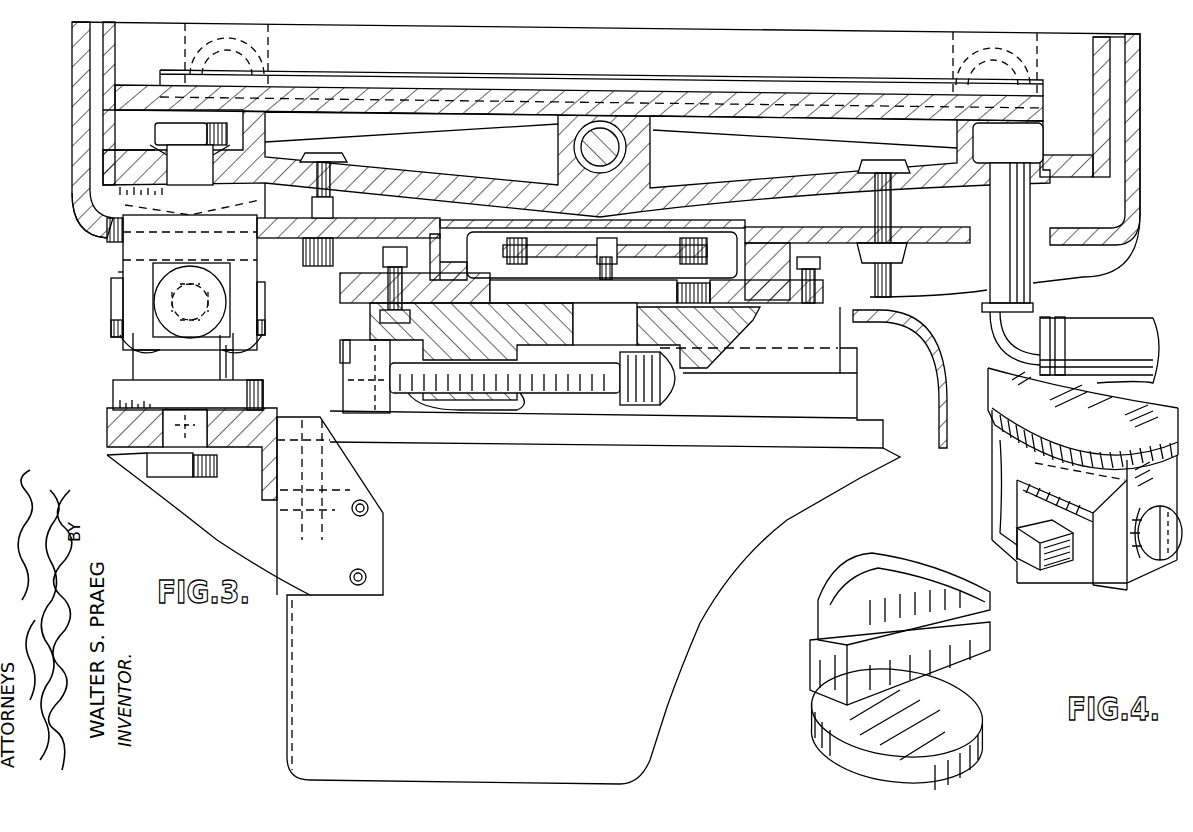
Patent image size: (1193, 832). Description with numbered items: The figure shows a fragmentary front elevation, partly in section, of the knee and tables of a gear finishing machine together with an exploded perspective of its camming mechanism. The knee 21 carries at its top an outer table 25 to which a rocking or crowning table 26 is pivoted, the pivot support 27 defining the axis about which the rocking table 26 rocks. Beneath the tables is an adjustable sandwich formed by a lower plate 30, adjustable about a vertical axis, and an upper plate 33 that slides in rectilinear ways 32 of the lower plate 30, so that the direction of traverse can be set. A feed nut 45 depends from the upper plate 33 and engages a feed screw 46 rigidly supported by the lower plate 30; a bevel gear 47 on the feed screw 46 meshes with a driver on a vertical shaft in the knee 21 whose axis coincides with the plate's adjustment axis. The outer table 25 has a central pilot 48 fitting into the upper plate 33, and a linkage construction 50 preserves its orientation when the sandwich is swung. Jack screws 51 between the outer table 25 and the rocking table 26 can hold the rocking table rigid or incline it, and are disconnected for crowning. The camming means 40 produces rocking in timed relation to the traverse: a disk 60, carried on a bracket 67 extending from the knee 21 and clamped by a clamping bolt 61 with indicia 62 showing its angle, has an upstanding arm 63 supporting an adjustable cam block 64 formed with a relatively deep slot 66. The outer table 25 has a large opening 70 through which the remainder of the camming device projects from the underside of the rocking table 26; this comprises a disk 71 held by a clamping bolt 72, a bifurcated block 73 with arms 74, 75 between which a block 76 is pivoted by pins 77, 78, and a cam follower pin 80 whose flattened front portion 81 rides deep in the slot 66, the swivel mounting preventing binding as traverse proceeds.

In FIG. 3, the knee 21 is at (287, 665).
In FIG. 3, the outer table 25 is at (1132, 178).
In FIG. 3, the rocking table 26 is at (510, 100).
In FIG. 3, the pivot support 27 is at (607, 140).
In FIG. 3, the lower plate 30 is at (848, 404).
In FIG. 3, the ways 32 is at (848, 363).
In FIG. 3, the upper plate 33 is at (842, 335).
In FIG. 3, the camming means 40 is at (103, 308).
In FIG. 3, the feed nut 45 is at (520, 402).
In FIG. 3, the feed screw 46 is at (408, 395).
In FIG. 3, the bevel gear 47 is at (633, 407).
In FIG. 3, the central pilot 48 is at (333, 293).
In FIG. 3, the linkage construction 50 is at (670, 256).
In FIG. 3, the jack screws 51 is at (904, 220).
In FIG. 3, the disk 60 is at (263, 397).
In FIG. 4, the disk 60 is at (830, 747).
In FIG. 3, the clamping bolt 61 is at (217, 463).
In FIG. 3, the indicia 62 is at (113, 402).
In FIG. 3, the arm 63 is at (237, 360).
In FIG. 4, the arm 63 is at (820, 593).
In FIG. 3, the cam block 64 is at (143, 343).
In FIG. 4, the cam block 64 is at (1000, 533).
In FIG. 4, the slot 66 is at (983, 617).
In FIG. 3, the bracket 67 is at (160, 490).
In FIG. 3, the opening 70 is at (118, 272).
In FIG. 3, the disk 71 is at (78, 213).
In FIG. 4, the disk 71 is at (991, 407).
In FIG. 3, the clamping bolt 72 is at (147, 123).
In FIG. 3, the bifurcated block 73 is at (117, 278).
In FIG. 4, the bifurcated block 73 is at (1000, 443).
In FIG. 3, the arm 74 is at (148, 356).
In FIG. 4, the arm 74 is at (1000, 540).
In FIG. 3, the arm 75 is at (213, 360).
In FIG. 4, the arm 75 is at (1023, 702).
In FIG. 3, the block 76 is at (212, 280).
In FIG. 4, the block 76 is at (1077, 573).
In FIG. 3, the pin 77 is at (267, 284).
In FIG. 4, the pin 77 is at (1163, 573).
In FIG. 3, the pin 78 is at (111, 322).
In FIG. 4, the pin 78 is at (987, 487).
In FIG. 3, the cam follower pin 80 is at (188, 395).
In FIG. 4, the flattened front portion 81 is at (1033, 553).